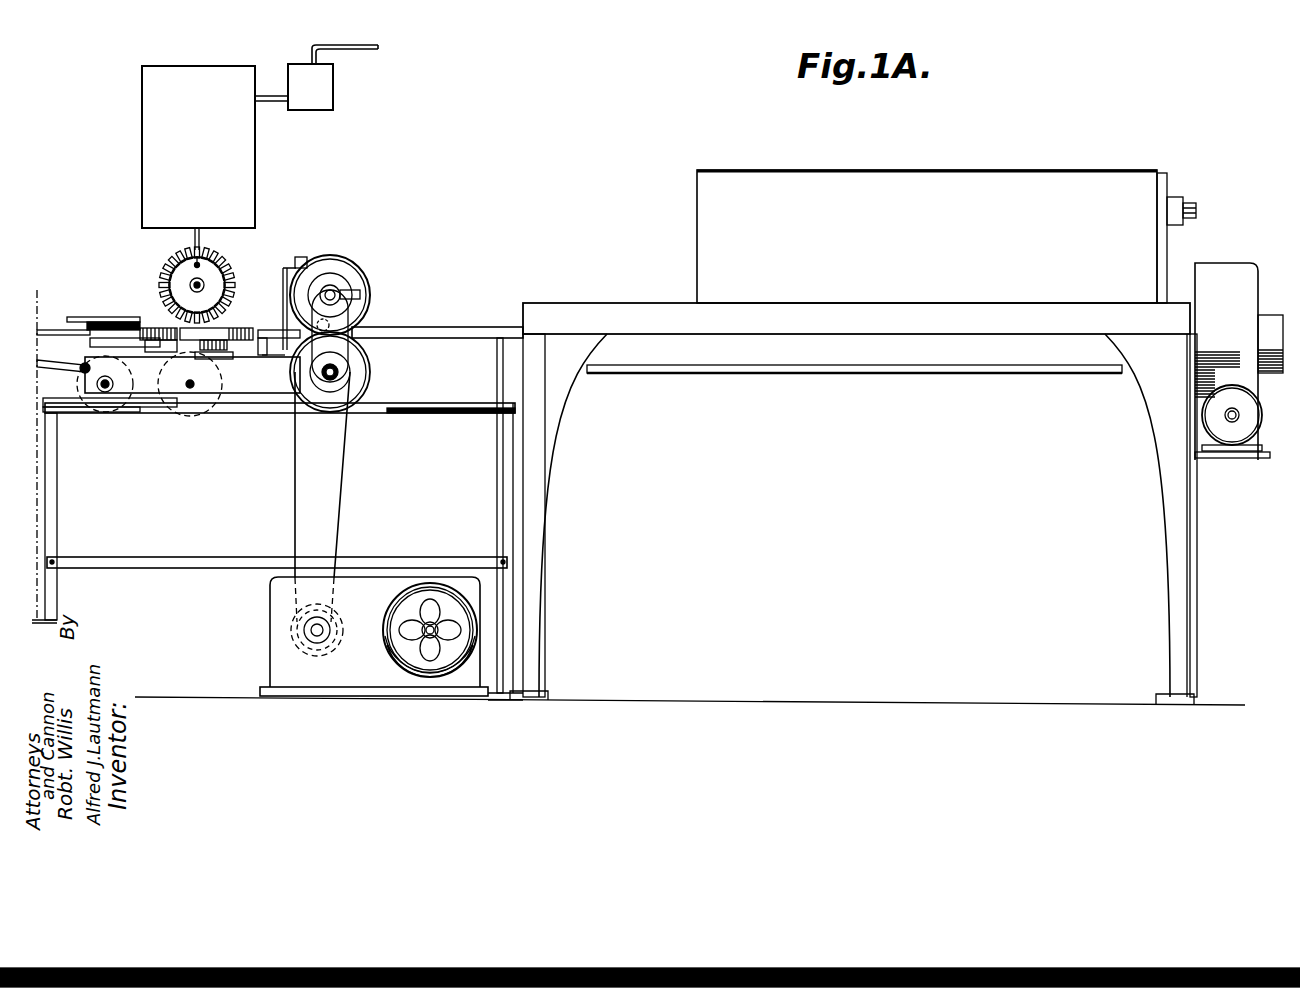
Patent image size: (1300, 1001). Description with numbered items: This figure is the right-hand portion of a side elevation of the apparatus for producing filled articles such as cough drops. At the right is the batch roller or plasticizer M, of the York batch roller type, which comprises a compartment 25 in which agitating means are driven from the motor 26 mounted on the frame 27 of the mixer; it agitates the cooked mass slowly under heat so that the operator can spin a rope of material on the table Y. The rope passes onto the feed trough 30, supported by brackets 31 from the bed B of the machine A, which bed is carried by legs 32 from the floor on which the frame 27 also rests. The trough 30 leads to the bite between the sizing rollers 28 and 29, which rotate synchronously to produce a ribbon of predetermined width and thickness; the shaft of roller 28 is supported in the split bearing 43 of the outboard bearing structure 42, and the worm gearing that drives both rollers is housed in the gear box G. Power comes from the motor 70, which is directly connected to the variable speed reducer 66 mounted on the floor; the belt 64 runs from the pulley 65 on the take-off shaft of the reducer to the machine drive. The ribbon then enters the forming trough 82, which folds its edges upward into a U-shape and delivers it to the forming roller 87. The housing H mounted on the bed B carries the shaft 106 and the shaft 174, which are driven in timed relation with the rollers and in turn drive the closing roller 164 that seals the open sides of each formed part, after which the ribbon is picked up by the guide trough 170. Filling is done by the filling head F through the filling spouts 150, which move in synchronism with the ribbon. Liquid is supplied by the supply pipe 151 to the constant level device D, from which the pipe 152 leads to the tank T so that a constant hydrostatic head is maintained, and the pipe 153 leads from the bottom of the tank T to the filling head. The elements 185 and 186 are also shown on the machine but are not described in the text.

The liquid supply pipe 151 is at (344, 38).
The pipe 152 is at (268, 95).
The pipe 153 is at (205, 236).
The constant liquid level maintaining device D is at (340, 78).
The tank T is at (255, 155).
The filling head F is at (213, 274).
The filling spouts 150 is at (233, 279).
The gear box G is at (288, 274).
The forming roller 87 is at (233, 324).
The forming trough 82 is at (276, 331).
The closing roller 164 is at (147, 330).
The guide trough 170 is at (48, 327).
The arm 185 is at (72, 357).
The roller 186 is at (92, 380).
The shaft 174 is at (105, 389).
The shaft 106 is at (188, 389).
The housing H is at (233, 390).
The split bearing 43 is at (334, 281).
The machine A is at (367, 256).
The sizing roller 28 is at (371, 278).
The outboard bearing structure 42 is at (338, 318).
The sizing roller 29 is at (370, 366).
The feed trough 30 is at (465, 329).
The bed B is at (420, 404).
The bracket 31 is at (497, 375).
The belt 64 is at (350, 483).
The legs 32 is at (57, 513).
The pulley 65 is at (312, 607).
The variable speed reducer 66 is at (270, 648).
The motor 70 is at (400, 651).
The compartment 25 is at (735, 172).
The batch roller or plasticizer M is at (946, 170).
The table Y is at (590, 306).
The motor 26 is at (1253, 418).
The frame 27 is at (1158, 455).